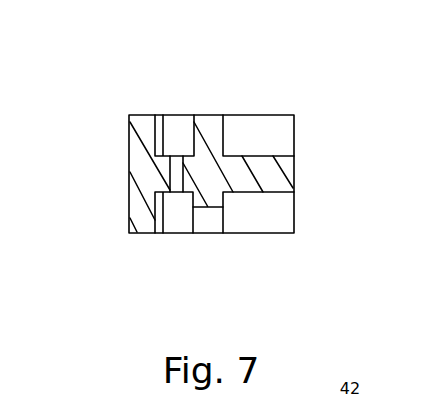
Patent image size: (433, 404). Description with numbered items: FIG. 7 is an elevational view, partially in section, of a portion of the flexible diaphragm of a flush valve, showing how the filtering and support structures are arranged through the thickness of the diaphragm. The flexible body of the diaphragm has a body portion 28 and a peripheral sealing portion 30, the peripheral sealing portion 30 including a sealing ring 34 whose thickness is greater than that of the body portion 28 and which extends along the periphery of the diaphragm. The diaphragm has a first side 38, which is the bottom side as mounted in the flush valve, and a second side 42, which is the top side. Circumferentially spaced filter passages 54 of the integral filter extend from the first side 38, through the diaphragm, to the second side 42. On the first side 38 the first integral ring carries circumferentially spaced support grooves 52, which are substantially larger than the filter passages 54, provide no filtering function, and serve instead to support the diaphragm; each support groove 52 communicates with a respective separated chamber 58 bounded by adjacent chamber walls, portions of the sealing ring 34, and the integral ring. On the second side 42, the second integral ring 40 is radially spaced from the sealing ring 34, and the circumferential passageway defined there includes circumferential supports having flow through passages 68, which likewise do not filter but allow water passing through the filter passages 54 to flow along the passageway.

The body portion 28 is at (278, 155).
The peripheral sealing portion 30 is at (127, 207).
The sealing ring 34 is at (130, 232).
The first side 38 is at (248, 192).
The second integral ring 40 is at (210, 114).
The second side 42 is at (253, 156).
The support grooves 52 is at (215, 218).
The filter passages 54 is at (178, 177).
The chambers 58 is at (182, 218).
The flow through passages 68 is at (177, 133).